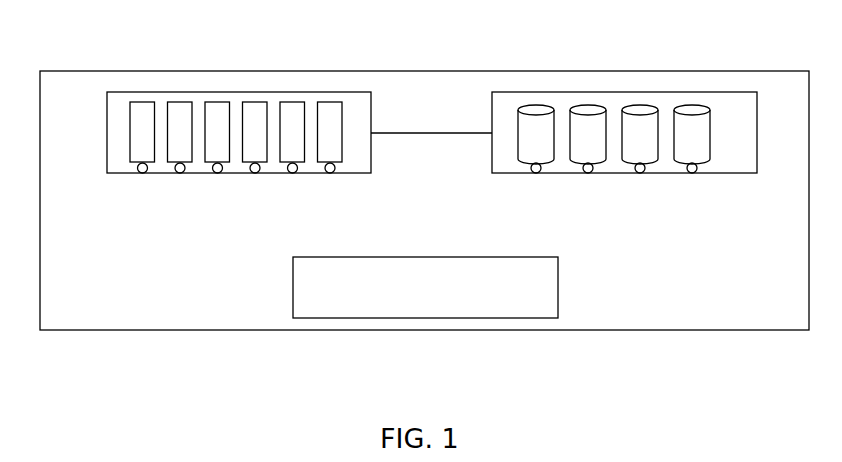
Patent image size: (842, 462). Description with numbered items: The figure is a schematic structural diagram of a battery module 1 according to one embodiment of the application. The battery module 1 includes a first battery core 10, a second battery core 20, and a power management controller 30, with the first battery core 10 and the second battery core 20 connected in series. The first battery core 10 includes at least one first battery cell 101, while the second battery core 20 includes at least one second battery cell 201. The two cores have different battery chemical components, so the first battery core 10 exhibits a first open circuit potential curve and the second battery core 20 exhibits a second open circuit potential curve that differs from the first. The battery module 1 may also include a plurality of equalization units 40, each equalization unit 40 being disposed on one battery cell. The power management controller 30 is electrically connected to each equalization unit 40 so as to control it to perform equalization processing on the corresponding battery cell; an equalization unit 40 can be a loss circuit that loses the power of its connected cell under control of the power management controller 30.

The battery module 1 is at (425, 70).
The first battery core 10 is at (238, 92).
The first battery cell 101 is at (291, 102).
The second battery core 20 is at (625, 92).
The second battery cell 201 is at (537, 105).
The power management controller 30 is at (424, 287).
The equalization unit 40 is at (143, 164).